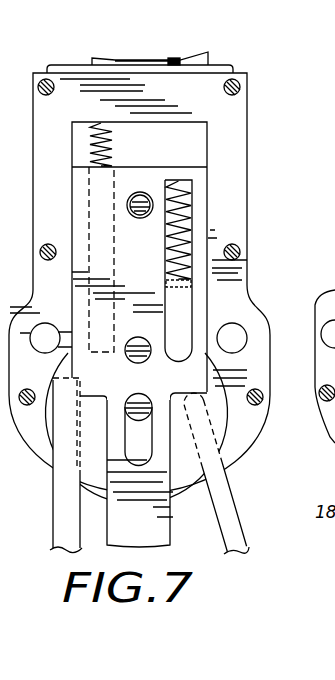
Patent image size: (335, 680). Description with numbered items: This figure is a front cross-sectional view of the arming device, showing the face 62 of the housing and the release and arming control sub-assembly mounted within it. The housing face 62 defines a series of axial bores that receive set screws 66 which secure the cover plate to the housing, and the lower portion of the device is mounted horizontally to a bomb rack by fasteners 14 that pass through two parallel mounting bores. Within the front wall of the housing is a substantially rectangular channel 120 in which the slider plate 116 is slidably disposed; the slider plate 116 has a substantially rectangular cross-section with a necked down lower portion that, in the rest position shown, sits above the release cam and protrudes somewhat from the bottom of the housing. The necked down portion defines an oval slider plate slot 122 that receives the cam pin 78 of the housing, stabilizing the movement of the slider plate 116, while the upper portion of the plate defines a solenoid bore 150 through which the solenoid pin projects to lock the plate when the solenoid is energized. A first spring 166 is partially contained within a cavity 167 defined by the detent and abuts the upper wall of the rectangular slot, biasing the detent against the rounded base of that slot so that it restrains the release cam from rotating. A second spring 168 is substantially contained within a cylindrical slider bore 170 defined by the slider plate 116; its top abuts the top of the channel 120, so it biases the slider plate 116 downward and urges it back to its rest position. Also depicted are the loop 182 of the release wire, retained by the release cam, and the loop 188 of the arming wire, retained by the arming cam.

The face of the housing 62 is at (235, 105).
The channel 120 is at (202, 147).
The slider plate slot 122 is at (192, 193).
The solenoid bore 150 is at (140, 192).
The first spring 166 is at (192, 218).
The cavity 167 is at (190, 284).
The second spring 168 is at (90, 125).
The slider bore 170 is at (88, 200).
The fasteners 14 is at (240, 336).
The set screws 66 is at (260, 393).
The cam pin 78 is at (144, 398).
The slider plate 116 is at (160, 547).
The loop 182 is at (63, 517).
The loop 188 is at (227, 507).